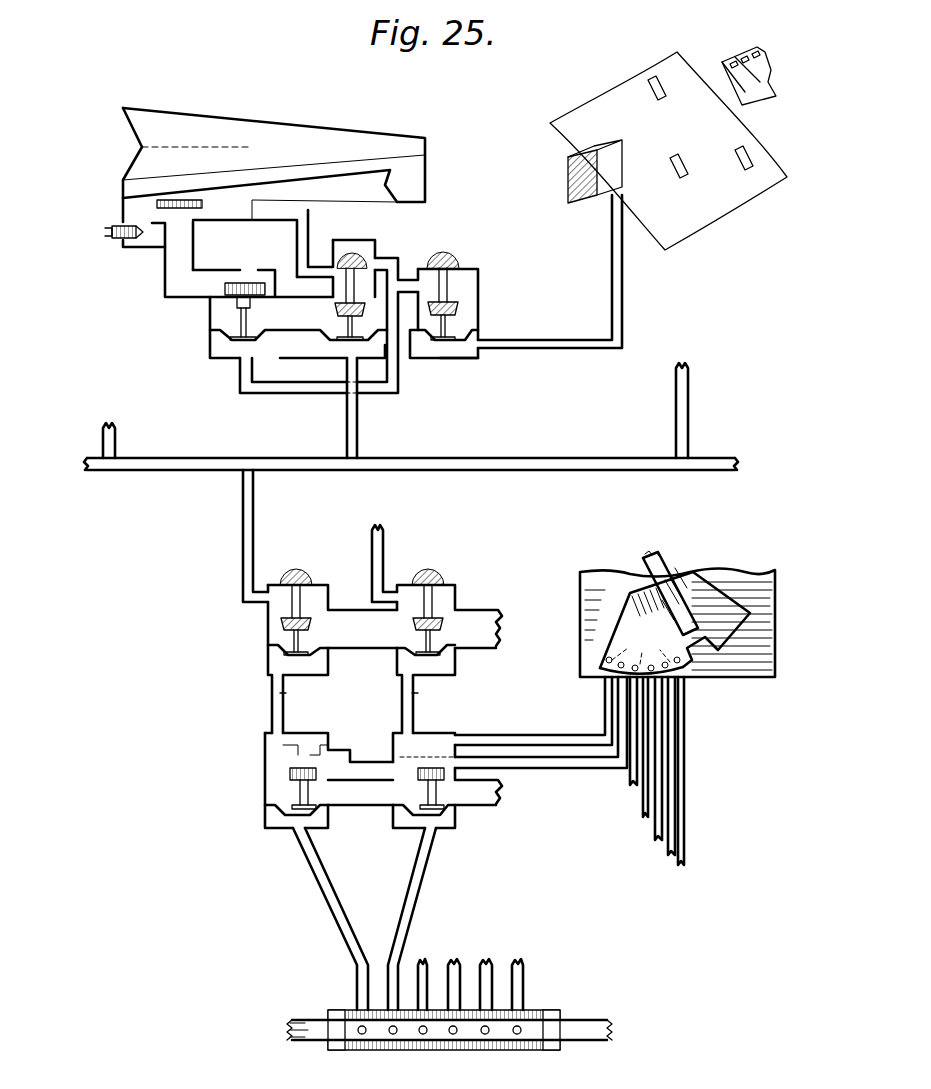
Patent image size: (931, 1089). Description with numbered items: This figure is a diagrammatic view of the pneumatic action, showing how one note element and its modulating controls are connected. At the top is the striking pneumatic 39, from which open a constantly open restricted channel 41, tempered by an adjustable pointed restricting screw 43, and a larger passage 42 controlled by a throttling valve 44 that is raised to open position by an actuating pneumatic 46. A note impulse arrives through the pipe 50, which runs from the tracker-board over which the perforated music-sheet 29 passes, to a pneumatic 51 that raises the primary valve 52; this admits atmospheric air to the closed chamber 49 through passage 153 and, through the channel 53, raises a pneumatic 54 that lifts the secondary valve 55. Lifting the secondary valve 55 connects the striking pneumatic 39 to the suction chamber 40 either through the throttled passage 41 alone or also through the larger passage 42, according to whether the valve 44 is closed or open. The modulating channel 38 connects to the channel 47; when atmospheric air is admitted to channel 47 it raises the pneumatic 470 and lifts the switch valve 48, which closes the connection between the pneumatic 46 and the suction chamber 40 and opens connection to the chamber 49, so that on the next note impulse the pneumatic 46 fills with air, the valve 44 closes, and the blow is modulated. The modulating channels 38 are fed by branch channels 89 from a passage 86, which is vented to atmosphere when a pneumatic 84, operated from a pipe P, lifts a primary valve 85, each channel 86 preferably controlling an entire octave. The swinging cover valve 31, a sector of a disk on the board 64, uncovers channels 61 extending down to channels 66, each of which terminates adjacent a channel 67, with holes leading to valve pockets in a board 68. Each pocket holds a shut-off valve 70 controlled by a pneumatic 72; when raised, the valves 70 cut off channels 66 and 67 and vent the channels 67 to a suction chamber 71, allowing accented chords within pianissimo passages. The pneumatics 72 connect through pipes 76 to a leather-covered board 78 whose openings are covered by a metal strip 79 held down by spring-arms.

The perforated ribbon or tape 29 is at (772, 82).
The swinging cover valve 31 is at (696, 609).
The modulating channel 38 is at (118, 435).
The striking pneumatic 39 is at (252, 122).
The suction chamber 40 is at (465, 322).
The restricted channel 41 is at (160, 232).
The larger passage 42 is at (200, 233).
The adjustable restricting screw 43 is at (108, 238).
The throttling valve 44 is at (180, 202).
The actuating pneumatic 46 is at (340, 198).
The channel 47 is at (385, 355).
The switch valve 48 is at (360, 304).
The closed chamber 49 is at (368, 252).
The pipe 50 is at (612, 272).
The pneumatic 51 is at (462, 340).
The primary valve 52 is at (452, 296).
The channel 53 is at (288, 394).
The pneumatic 54 is at (238, 315).
The secondary valve 55 is at (224, 290).
The channels 61 is at (646, 623).
The board 64 is at (775, 598).
The channels 66 is at (568, 758).
The channel 67 is at (268, 744).
The board 68 is at (530, 735).
The shut-off valve 70 is at (290, 772).
The suction chamber 71 is at (268, 800).
The pneumatic 72 is at (285, 830).
The pipes 76 is at (330, 910).
The board 78 is at (332, 1012).
The metal strip 79 is at (600, 1020).
The pneumatic 84 is at (270, 660).
The primary valve 85 is at (290, 600).
The passage 86 is at (242, 542).
The branch channels 89 is at (536, 472).
The passage 153 is at (408, 262).
The pneumatic 470 is at (330, 355).